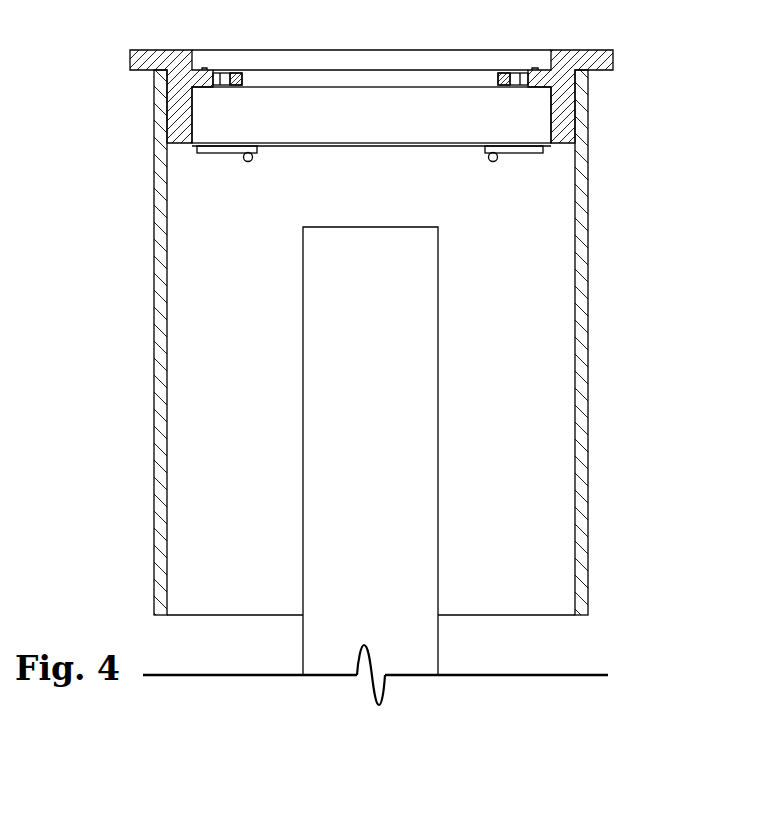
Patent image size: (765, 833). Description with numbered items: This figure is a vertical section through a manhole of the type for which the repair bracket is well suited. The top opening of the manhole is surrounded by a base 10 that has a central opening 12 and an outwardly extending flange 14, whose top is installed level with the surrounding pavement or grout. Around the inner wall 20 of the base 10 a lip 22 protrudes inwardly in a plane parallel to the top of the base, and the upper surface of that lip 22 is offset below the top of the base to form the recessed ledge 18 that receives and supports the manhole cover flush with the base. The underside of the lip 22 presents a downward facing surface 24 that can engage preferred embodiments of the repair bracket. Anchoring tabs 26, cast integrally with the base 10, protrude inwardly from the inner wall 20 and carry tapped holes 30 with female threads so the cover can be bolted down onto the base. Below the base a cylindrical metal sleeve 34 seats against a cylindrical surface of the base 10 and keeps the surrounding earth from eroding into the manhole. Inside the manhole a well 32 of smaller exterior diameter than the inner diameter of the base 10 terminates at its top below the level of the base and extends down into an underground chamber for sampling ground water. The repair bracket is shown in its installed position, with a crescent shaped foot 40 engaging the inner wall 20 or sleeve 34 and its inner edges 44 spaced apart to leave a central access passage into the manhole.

The base 10 is at (614, 58).
The central opening 12 is at (368, 50).
The outwardly extending flange 14 is at (603, 49).
The recessed ledge 18 is at (188, 97).
The inner wall 20 is at (530, 132).
The lip 22 is at (547, 71).
The downward facing surface 24 is at (543, 90).
The anchoring tabs 26 is at (234, 73).
The tapped holes 30 is at (226, 73).
The well 32 is at (405, 355).
The sleeve 34 is at (161, 330).
The crescent shaped foot 40 is at (278, 148).
The inner edges 44 is at (303, 155).